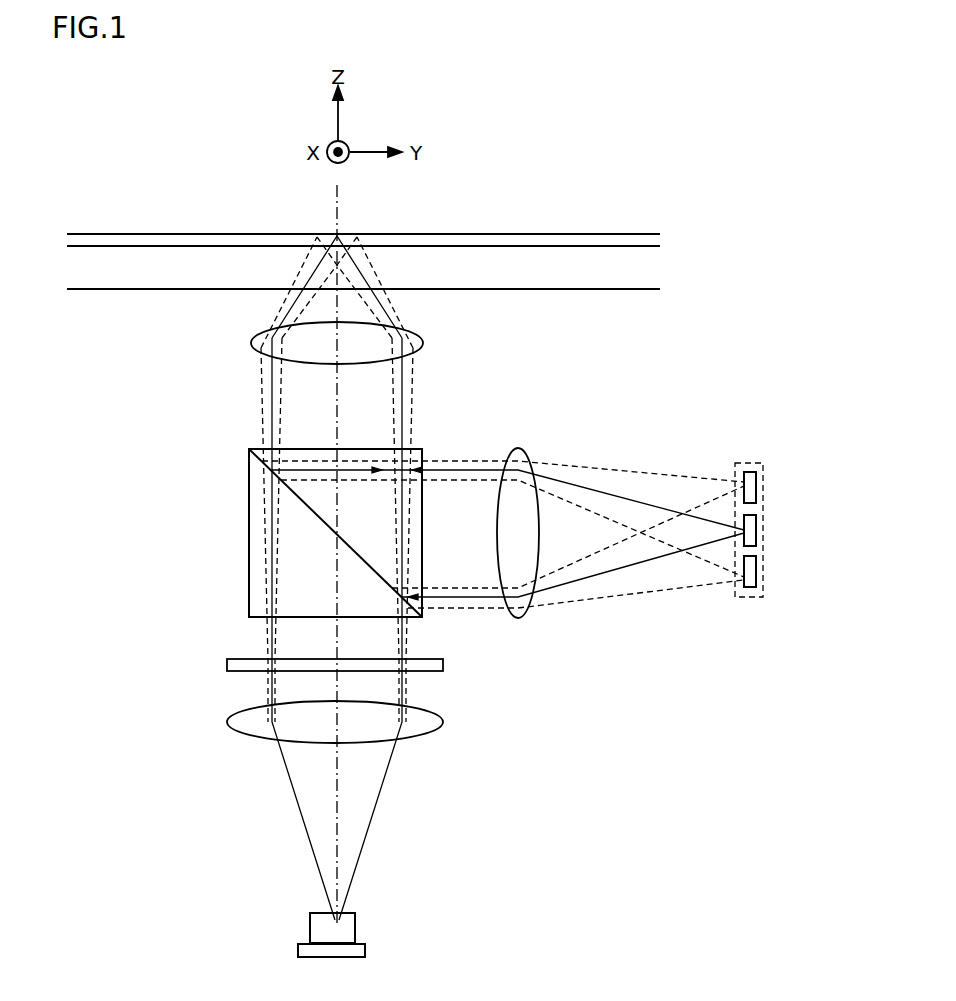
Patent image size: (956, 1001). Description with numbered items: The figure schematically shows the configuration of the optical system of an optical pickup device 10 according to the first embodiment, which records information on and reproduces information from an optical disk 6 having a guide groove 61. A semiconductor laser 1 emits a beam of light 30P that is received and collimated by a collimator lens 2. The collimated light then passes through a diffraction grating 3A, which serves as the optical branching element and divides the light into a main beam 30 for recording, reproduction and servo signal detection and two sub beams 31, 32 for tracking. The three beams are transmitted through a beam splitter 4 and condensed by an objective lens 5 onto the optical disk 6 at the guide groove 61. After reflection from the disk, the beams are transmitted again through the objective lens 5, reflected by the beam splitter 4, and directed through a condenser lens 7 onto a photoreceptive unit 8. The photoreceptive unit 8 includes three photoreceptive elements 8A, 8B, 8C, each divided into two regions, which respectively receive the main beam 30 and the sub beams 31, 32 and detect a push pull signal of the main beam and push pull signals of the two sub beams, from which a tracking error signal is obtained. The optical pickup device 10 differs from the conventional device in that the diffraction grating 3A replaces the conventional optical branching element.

The semiconductor laser 1 is at (310, 930).
The collimator lens 2 is at (235, 733).
The diffraction grating 3A is at (227, 663).
The beam splitter 4 is at (249, 553).
The objective lens 5 is at (252, 343).
The optical disk 6 is at (165, 266).
The guide groove 61 is at (235, 232).
The condenser lens 7 is at (518, 618).
The photoreceptive unit 8 is at (781, 506).
The photoreceptive element 8A is at (757, 530).
The photoreceptive element 8B is at (757, 487).
The photoreceptive element 8C is at (757, 573).
The optical pickup device 10 is at (92, 328).
The main beam 30 is at (403, 403).
The sub beam 31 is at (413, 378).
The sub beam 32 is at (478, 363).
The beam of light 30P is at (395, 578).